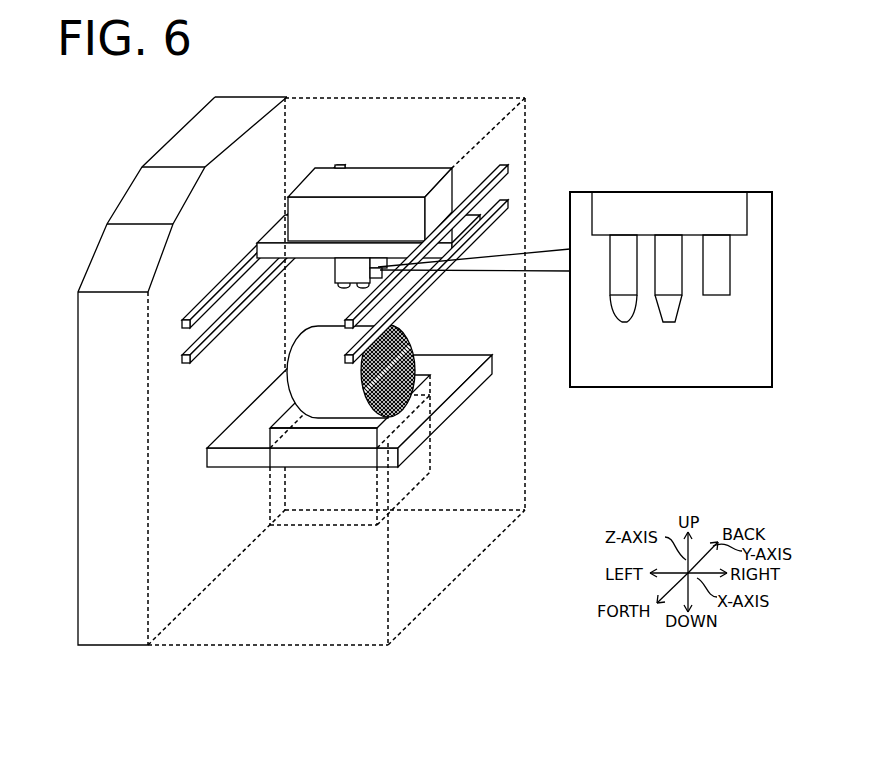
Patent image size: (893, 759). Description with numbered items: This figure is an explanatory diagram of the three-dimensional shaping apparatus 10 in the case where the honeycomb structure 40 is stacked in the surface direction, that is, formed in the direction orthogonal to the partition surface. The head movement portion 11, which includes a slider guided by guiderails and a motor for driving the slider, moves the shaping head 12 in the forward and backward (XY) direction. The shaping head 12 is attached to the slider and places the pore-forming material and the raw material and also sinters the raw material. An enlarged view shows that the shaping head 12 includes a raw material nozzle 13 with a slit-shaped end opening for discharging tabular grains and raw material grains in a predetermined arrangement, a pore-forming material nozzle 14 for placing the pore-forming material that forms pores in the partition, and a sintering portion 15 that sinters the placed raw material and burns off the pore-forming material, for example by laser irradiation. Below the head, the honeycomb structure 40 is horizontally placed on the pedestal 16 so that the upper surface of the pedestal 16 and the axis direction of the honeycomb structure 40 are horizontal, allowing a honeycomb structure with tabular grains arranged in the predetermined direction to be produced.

The three-dimensional shaping apparatus 10 is at (540, 80).
The head movement portion 11 is at (458, 214).
The shaping head 12 is at (355, 267).
The raw material nozzle 13 is at (623, 323).
The pore-forming material nozzle 14 is at (667, 323).
The sintering portion 15 is at (715, 296).
The pedestal 16 is at (432, 432).
The honeycomb structure 40 is at (413, 366).